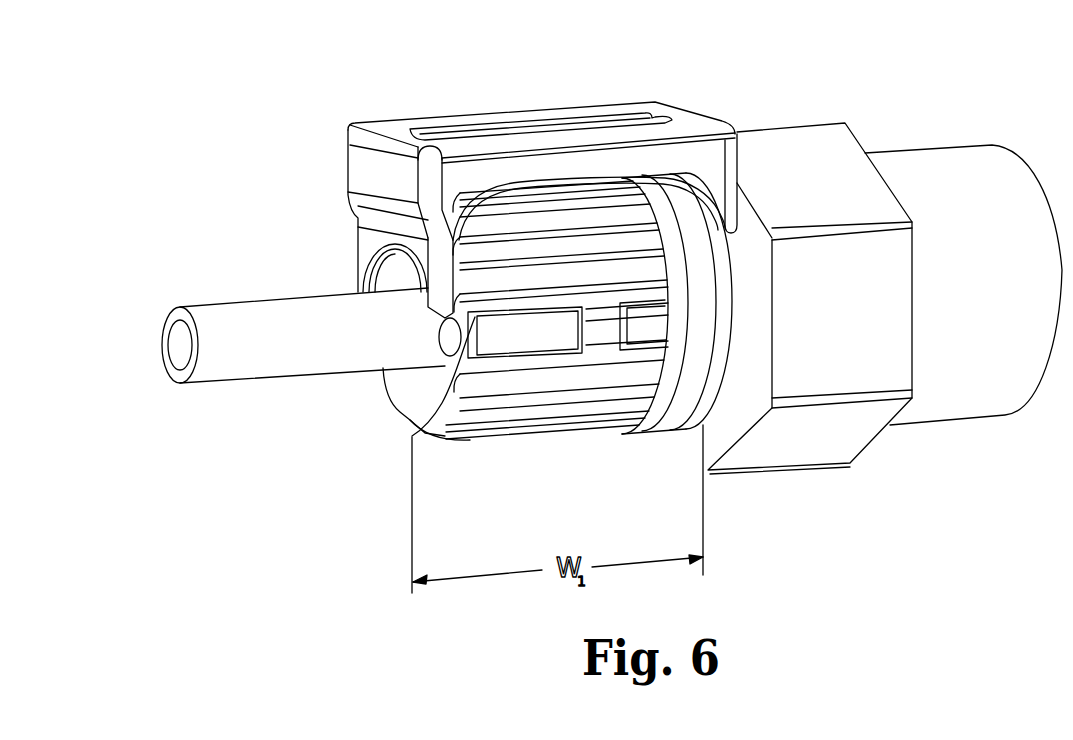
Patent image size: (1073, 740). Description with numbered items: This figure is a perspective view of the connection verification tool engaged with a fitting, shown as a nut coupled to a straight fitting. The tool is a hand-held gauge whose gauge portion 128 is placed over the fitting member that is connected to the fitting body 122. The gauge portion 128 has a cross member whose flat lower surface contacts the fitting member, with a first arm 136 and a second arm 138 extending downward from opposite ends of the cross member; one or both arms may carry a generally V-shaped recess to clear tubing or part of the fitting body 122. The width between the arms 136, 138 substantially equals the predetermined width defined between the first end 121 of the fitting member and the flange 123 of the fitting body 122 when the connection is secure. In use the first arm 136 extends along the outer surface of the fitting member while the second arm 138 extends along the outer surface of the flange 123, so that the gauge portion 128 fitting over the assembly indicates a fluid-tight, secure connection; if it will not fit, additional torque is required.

The first end 121 is at (407, 415).
The fitting body 122 is at (818, 466).
The flange 123 is at (670, 432).
The gauge portion 128 is at (617, 98).
The first arm 136 is at (737, 128).
The second arm 138 is at (358, 275).